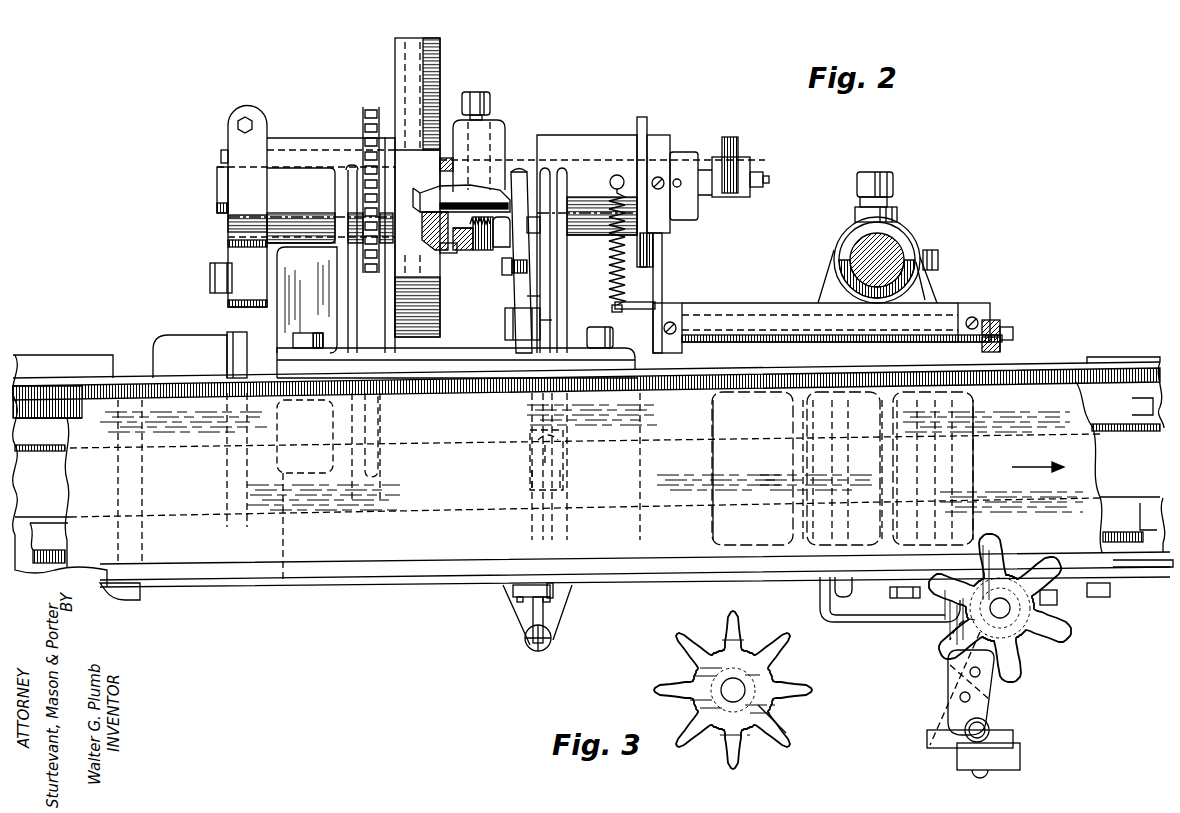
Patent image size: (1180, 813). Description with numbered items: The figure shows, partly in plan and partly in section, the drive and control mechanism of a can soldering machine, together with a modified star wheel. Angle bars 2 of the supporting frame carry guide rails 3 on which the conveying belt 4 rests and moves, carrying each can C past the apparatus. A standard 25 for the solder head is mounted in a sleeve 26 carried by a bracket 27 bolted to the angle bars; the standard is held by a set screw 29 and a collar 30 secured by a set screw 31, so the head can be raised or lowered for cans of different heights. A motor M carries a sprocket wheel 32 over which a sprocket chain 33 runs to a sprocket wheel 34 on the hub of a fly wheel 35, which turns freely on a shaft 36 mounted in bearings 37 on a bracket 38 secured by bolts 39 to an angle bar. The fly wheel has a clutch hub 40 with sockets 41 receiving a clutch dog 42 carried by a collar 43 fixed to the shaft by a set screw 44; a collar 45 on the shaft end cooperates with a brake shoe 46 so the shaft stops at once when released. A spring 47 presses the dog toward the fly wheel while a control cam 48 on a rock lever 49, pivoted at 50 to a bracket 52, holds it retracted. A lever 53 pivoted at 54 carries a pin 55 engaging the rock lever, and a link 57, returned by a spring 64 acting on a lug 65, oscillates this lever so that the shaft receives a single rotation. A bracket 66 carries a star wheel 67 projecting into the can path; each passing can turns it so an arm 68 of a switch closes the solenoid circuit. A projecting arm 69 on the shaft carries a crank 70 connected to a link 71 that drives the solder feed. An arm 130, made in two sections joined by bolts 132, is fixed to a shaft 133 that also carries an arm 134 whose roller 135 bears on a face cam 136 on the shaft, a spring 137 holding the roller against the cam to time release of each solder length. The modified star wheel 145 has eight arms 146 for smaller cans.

In FIG. 2, the angle bars 2 is at (67, 375).
In FIG. 2, the guide rails 3 is at (55, 440).
In FIG. 2, the conveying belt 4 is at (380, 530).
In FIG. 2, the motor M is at (102, 363).
In FIG. 2, the can C is at (713, 450).
In FIG. 2, the standard 25 is at (868, 255).
In FIG. 2, the sleeve 26 is at (925, 282).
In FIG. 2, the bracket 27 is at (880, 605).
In FIG. 2, the set screw 29 is at (880, 172).
In FIG. 2, the collar 30 is at (903, 238).
In FIG. 2, the set screw 31 is at (937, 253).
In FIG. 2, the sprocket wheel 32 is at (383, 420).
In FIG. 2, the sprocket chain 33 is at (373, 348).
In FIG. 2, the sprocket wheel 34 is at (365, 115).
In FIG. 2, the fly wheel 35 is at (437, 48).
In FIG. 2, the shaft 36 is at (217, 180).
In FIG. 2, the bearings 37 is at (300, 140).
In FIG. 2, the bracket 38 is at (488, 360).
In FIG. 2, the bolts 39 is at (293, 338).
In FIG. 2, the clutch hub 40 is at (440, 145).
In FIG. 2, the sockets 41 is at (440, 170).
In FIG. 2, the clutch dog 42 is at (465, 250).
In FIG. 2, the collar 43 is at (500, 133).
In FIG. 2, the set screw 44 is at (488, 95).
In FIG. 2, the collar 45 is at (221, 157).
In FIG. 2, the brake shoe 46 is at (248, 190).
In FIG. 2, the spring 47 is at (485, 252).
In FIG. 2, the control cam 48 is at (503, 230).
In FIG. 2, the rock lever 49 is at (527, 296).
In FIG. 2, the pivot 50 is at (502, 272).
In FIG. 2, the bracket 52 is at (560, 475).
In FIG. 2, the lever 53 is at (532, 478).
In FIG. 2, the pivot 54 is at (545, 452).
In FIG. 2, the pin 55 is at (540, 320).
In FIG. 2, the link 57 is at (528, 588).
In FIG. 2, the spring 64 is at (528, 650).
In FIG. 2, the lug 65 is at (540, 612).
In FIG. 2, the bracket 66 is at (952, 630).
In FIG. 2, the star wheel 67 is at (1020, 667).
In FIG. 2, the arm 68 is at (995, 702).
In FIG. 2, the projecting arm 69 is at (685, 150).
In FIG. 2, the crank 70 is at (763, 178).
In FIG. 2, the link 71 is at (732, 137).
In FIG. 2, the arm 130 is at (1000, 350).
In FIG. 2, the bolts 132 is at (1005, 330).
In FIG. 2, the shaft 133 is at (970, 308).
In FIG. 2, the arm 134 is at (660, 278).
In FIG. 2, the roller 135 is at (653, 255).
In FIG. 2, the face cam 136 is at (640, 120).
In FIG. 2, the spring 137 is at (612, 243).
In FIG. 3, the star wheel 145 is at (733, 655).
In FIG. 3, the arms 146 is at (790, 728).